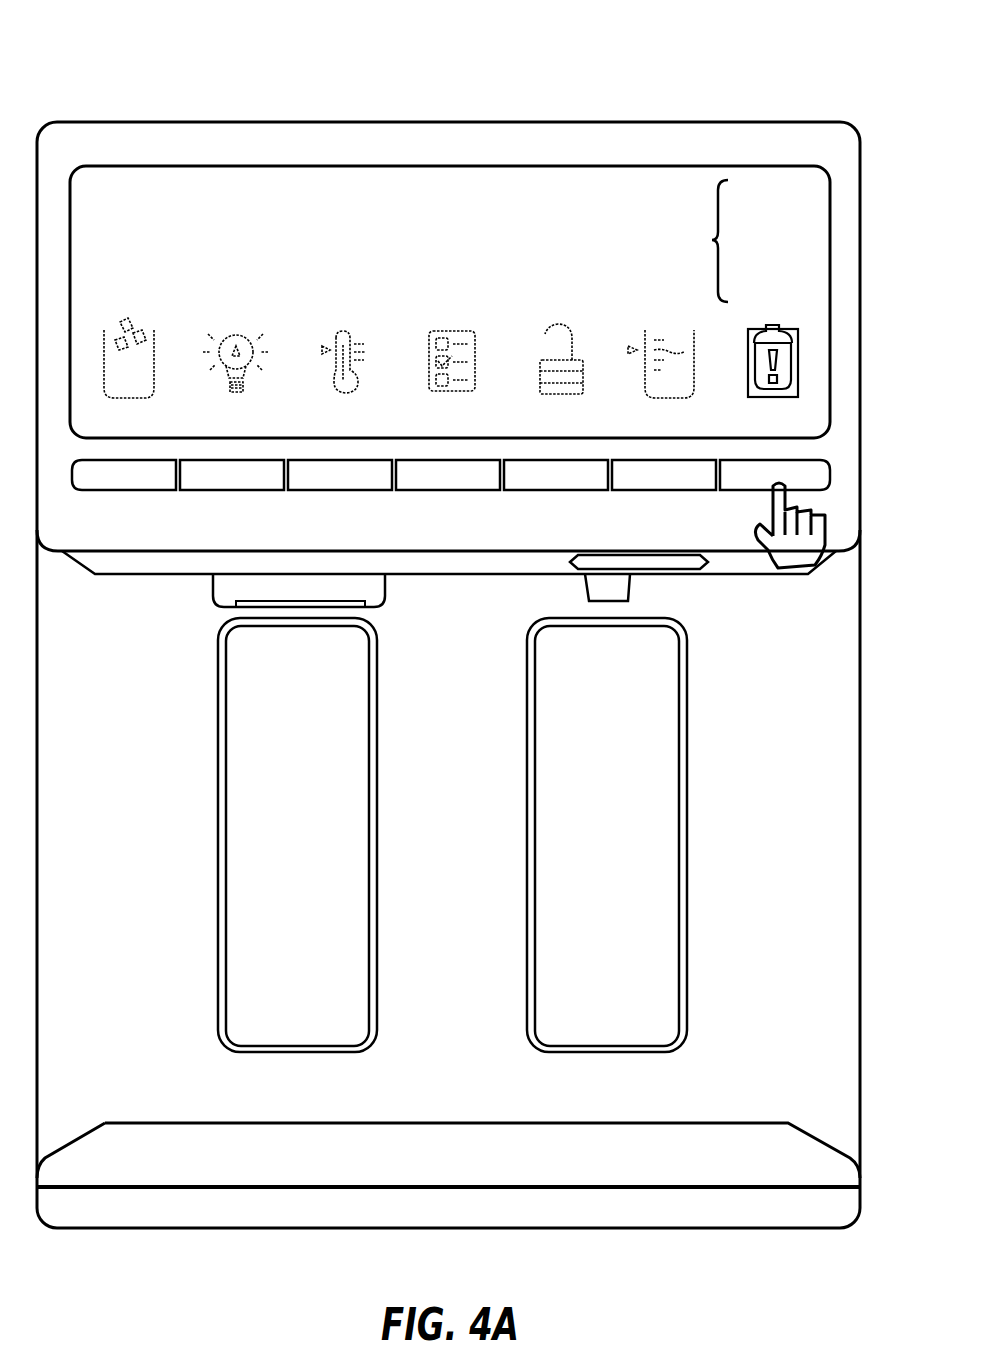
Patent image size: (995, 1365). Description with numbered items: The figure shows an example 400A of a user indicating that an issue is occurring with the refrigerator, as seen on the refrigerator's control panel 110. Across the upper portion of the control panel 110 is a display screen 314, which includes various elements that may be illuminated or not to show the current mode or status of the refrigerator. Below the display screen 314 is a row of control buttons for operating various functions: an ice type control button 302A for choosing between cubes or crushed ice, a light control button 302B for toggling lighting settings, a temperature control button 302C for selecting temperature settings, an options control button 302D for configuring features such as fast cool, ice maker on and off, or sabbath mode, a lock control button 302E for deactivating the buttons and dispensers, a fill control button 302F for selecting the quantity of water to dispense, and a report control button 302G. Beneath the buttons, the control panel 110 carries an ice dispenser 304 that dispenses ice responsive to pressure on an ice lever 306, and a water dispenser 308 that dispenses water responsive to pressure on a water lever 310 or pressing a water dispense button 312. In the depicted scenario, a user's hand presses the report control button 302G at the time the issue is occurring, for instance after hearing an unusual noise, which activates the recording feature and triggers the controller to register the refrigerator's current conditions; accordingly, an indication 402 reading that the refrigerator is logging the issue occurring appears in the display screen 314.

The example of a user indicating that an issue is occurring 400A is at (160, 37).
The control panel 110 is at (763, 122).
The display screen 314 is at (171, 166).
The indication 402 is at (716, 240).
The ice type control button 302A is at (124, 492).
The light control button 302B is at (232, 492).
The temperature control button 302C is at (340, 492).
The options control button 302D is at (448, 492).
The lock control button 302E is at (556, 492).
The fill control button 302F is at (664, 492).
The report control button 302G is at (775, 514).
The ice dispenser 304 is at (213, 592).
The ice lever 306 is at (217, 672).
The water dispenser 308 is at (630, 590).
The water lever 310 is at (688, 668).
The water dispense button 312 is at (702, 572).